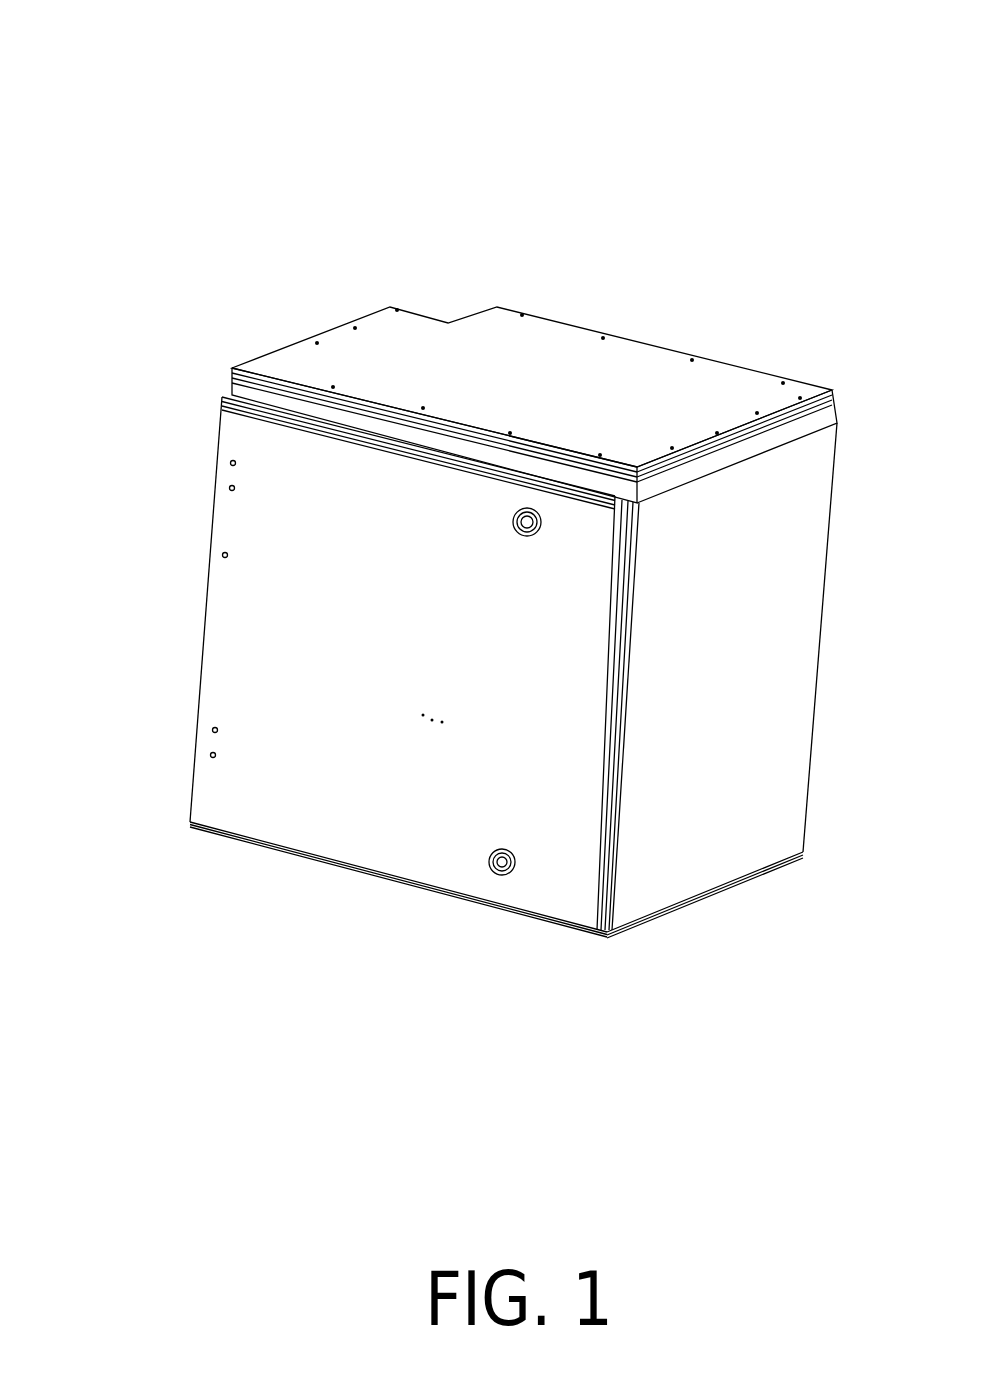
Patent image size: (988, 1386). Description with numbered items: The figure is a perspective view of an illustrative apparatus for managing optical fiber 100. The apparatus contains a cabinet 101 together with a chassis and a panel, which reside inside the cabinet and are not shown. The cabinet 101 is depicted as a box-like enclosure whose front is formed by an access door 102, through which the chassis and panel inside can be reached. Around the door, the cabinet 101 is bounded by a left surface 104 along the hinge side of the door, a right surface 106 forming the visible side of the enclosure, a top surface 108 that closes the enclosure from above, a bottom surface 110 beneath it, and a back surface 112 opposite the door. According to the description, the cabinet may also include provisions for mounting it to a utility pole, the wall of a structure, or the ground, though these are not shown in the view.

The apparatus for managing optical fiber 100 is at (740, 94).
The cabinet 101 is at (733, 362).
The top surface 108 is at (550, 352).
The access door 102 is at (238, 650).
The left surface 104 is at (202, 510).
The right surface 106 is at (792, 537).
The back surface 112 is at (816, 623).
The bottom surface 110 is at (720, 897).